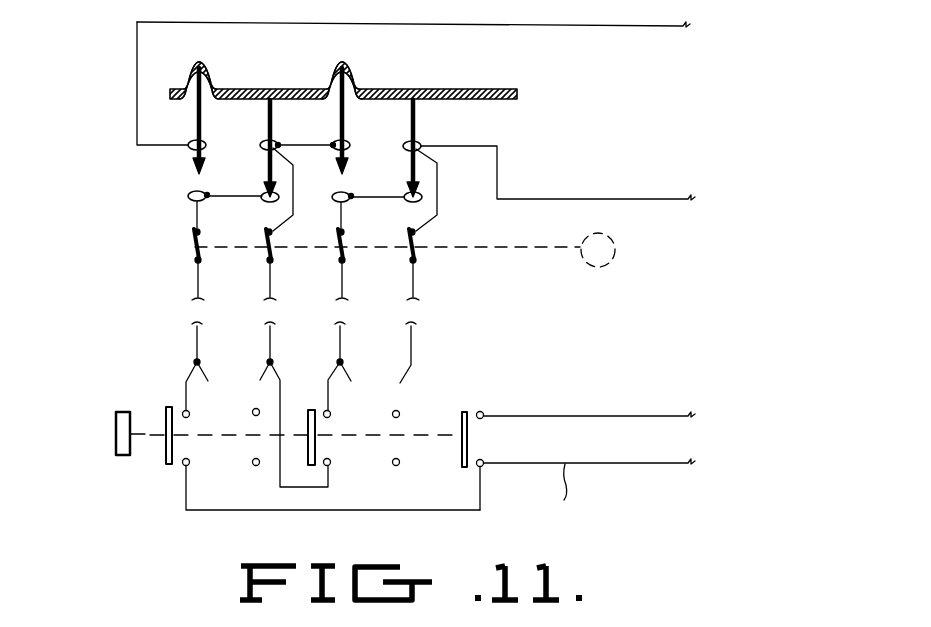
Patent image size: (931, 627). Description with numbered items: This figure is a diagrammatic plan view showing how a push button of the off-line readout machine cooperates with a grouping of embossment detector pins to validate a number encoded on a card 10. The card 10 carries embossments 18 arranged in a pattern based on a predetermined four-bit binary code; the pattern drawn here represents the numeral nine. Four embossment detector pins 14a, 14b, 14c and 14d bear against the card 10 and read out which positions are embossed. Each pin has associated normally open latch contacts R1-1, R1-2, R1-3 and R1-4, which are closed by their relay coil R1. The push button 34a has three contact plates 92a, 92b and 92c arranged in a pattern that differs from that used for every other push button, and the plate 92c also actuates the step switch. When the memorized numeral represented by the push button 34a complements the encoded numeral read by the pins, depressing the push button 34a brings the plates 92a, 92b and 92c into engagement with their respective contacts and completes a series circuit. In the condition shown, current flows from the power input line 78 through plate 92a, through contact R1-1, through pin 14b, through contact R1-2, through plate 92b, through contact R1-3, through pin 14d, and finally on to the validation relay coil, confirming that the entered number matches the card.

The embossments 18 is at (213, 76).
The card 10 is at (461, 90).
The embossment detector pin 14a is at (202, 126).
The embossment detector pin 14b is at (274, 126).
The embossment detector pin 14c is at (345, 126).
The embossment detector pin 14d is at (417, 126).
The relay coil R1 is at (606, 264).
The latch contact R1-1 is at (192, 254).
The latch contact R1-2 is at (266, 254).
The latch contact R1-3 is at (339, 254).
The latch contact R1-4 is at (410, 256).
The contact plate 92a is at (166, 467).
The contact plate 92b is at (312, 408).
The contact plate 92c is at (462, 410).
The push button 34a is at (118, 457).
The power input line 78 is at (579, 493).